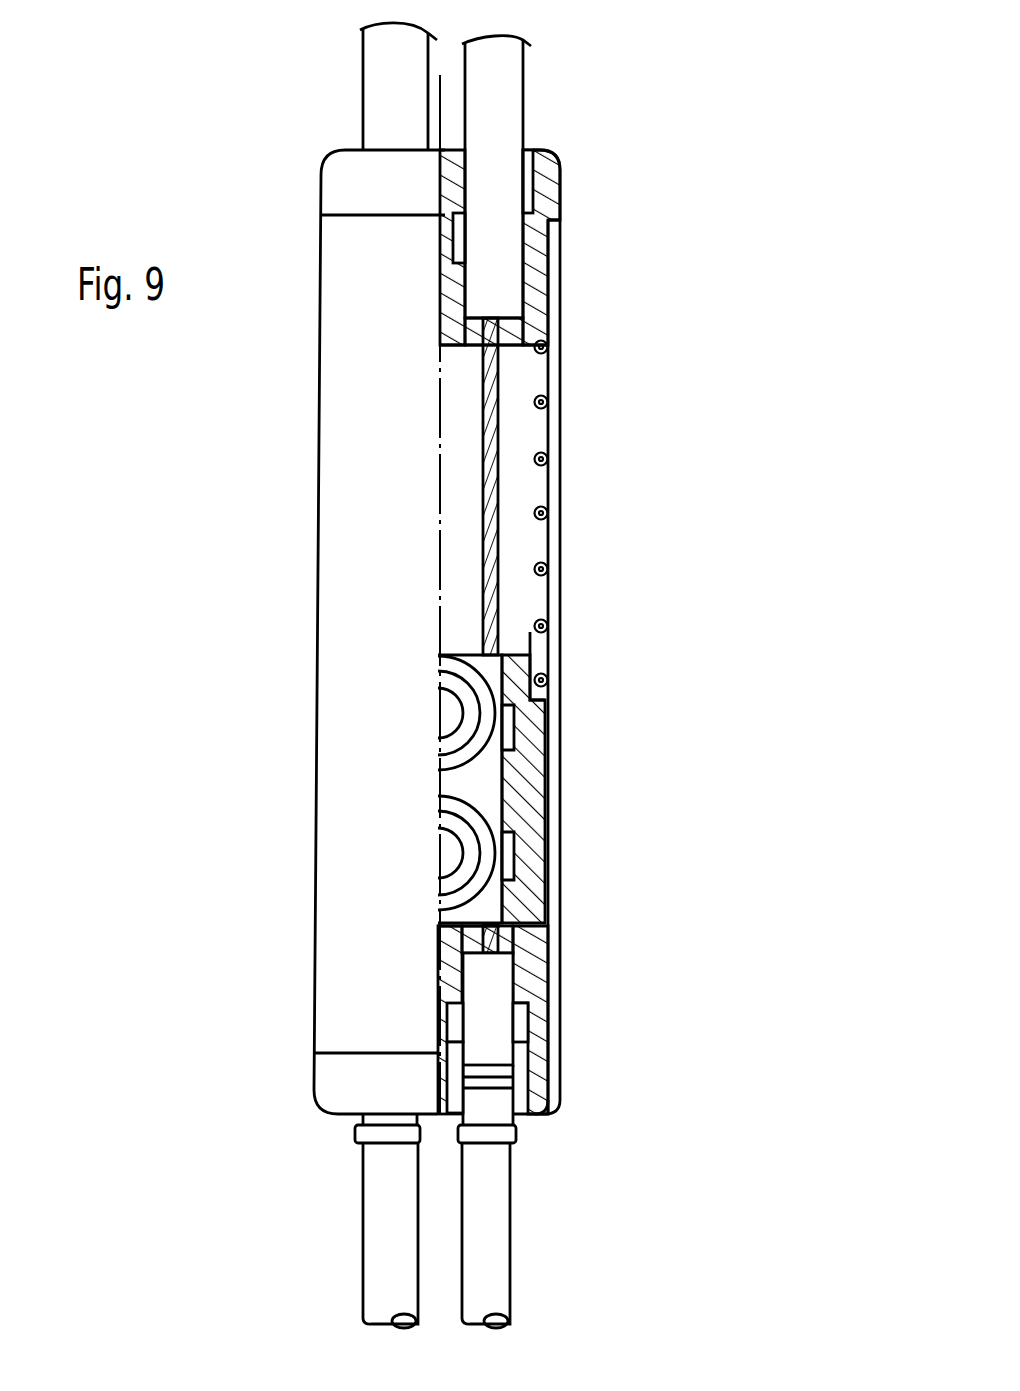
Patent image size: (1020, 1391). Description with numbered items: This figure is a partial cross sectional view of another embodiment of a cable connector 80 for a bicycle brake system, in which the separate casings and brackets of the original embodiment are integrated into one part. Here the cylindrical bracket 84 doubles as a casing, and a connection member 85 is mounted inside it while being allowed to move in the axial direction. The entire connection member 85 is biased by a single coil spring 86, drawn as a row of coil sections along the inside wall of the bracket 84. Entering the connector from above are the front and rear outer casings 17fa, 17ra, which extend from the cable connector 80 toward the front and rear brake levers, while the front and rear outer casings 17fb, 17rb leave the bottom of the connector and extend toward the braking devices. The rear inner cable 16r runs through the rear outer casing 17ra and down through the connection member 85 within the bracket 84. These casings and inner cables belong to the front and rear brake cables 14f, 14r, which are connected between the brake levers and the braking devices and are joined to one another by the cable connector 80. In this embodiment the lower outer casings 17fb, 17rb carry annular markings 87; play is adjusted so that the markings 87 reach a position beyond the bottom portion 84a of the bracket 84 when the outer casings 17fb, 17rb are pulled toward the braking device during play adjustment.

The cable connector 80 is at (572, 770).
The cylindrical bracket 84 is at (548, 856).
The bottom portion of the bracket 84a is at (556, 1110).
The connection member 85 is at (487, 723).
The coil spring 86 is at (541, 459).
The annular markings 87 is at (528, 1040).
The rear inner cable 16r is at (497, 390).
The front outer casing toward brake lever 17fa is at (380, 66).
The rear outer casing toward brake lever 17ra is at (515, 78).
The front outer casing toward braking device 17fb is at (390, 1248).
The rear outer casing toward braking device 17rb is at (500, 1248).
The front brake cable 14f is at (340, 1152).
The rear brake cable 14r is at (524, 1160).